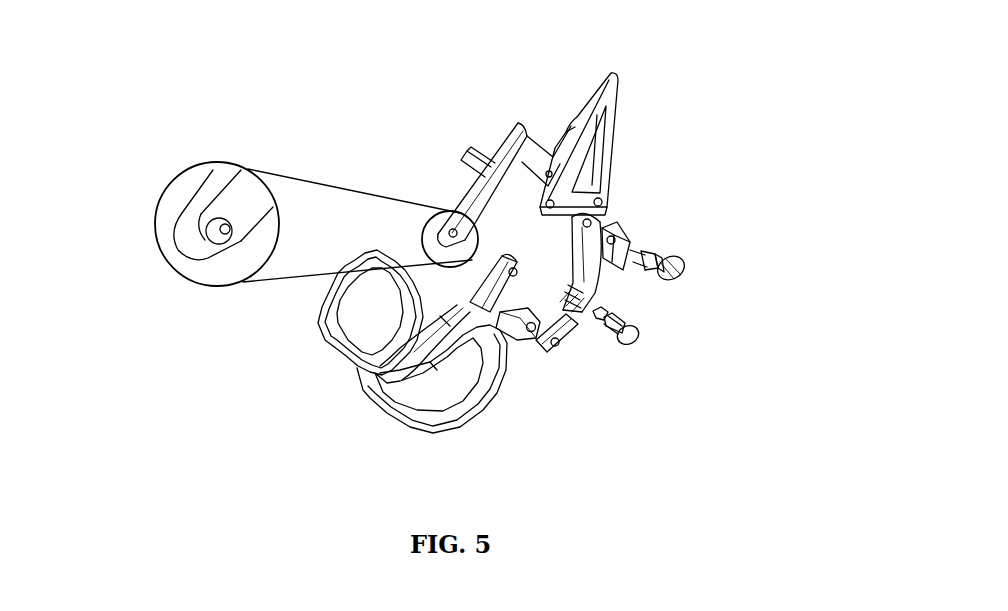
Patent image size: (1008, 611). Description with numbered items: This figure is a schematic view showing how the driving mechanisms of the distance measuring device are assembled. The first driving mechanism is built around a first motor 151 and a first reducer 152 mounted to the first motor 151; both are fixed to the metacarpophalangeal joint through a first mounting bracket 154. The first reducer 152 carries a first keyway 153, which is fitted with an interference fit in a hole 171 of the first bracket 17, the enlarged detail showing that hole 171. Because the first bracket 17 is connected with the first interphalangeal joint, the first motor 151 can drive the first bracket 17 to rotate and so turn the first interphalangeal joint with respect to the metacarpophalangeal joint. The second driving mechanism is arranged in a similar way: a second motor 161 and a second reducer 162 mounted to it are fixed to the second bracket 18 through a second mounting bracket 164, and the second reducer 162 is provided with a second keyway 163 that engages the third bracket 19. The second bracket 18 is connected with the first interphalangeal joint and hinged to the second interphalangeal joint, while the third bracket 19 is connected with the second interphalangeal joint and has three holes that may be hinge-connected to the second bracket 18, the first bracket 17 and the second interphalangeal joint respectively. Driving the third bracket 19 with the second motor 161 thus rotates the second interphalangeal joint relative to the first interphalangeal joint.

The first bracket 17 is at (509, 158).
The hole 171 is at (225, 233).
The third bracket 19 is at (584, 140).
The second bracket 18 is at (578, 308).
The first mounting bracket 154 is at (553, 323).
The first keyway 153 is at (592, 313).
The first motor 151 is at (630, 338).
The first reducer 152 is at (614, 323).
The second mounting bracket 164 is at (616, 224).
The second keyway 163 is at (647, 248).
The second motor 161 is at (682, 265).
The second reducer 162 is at (659, 263).